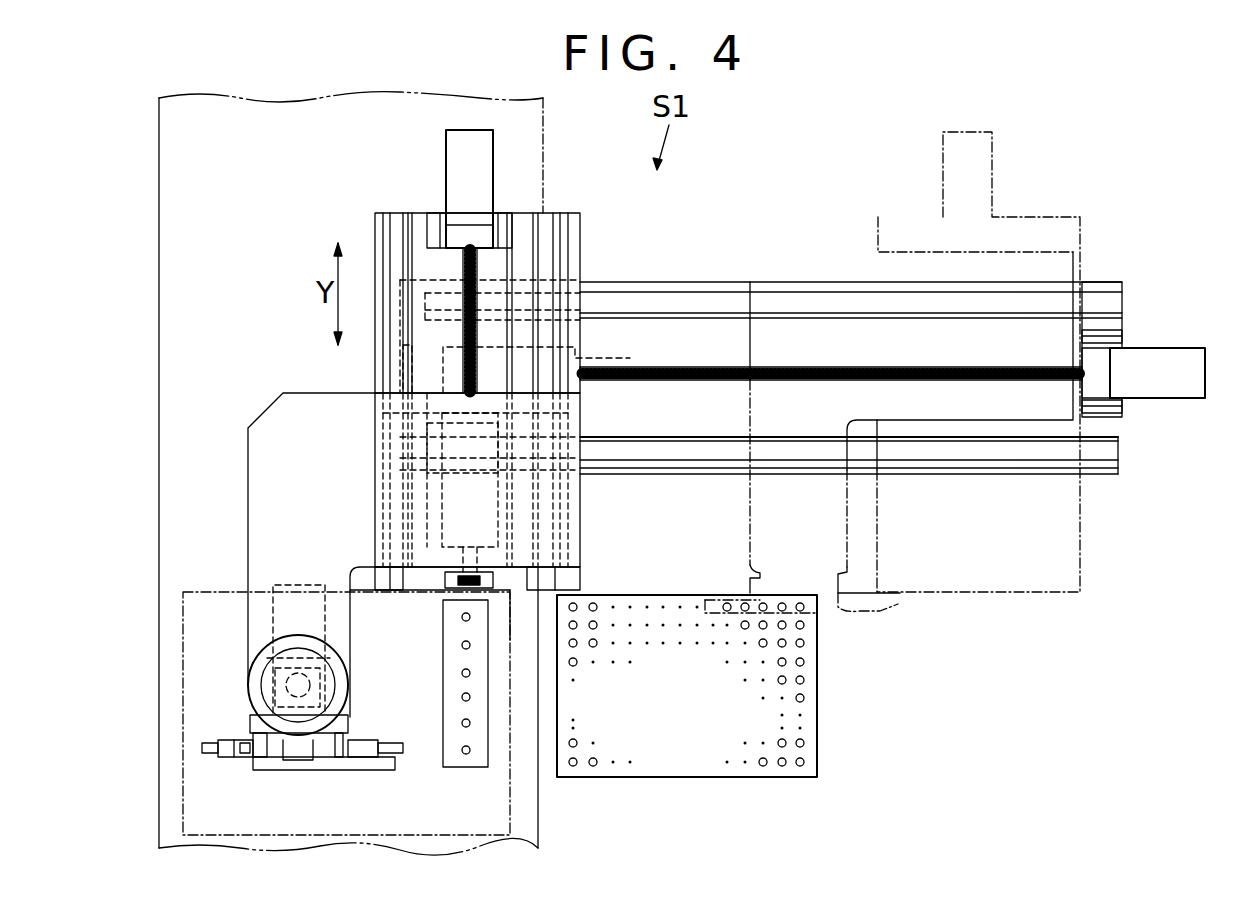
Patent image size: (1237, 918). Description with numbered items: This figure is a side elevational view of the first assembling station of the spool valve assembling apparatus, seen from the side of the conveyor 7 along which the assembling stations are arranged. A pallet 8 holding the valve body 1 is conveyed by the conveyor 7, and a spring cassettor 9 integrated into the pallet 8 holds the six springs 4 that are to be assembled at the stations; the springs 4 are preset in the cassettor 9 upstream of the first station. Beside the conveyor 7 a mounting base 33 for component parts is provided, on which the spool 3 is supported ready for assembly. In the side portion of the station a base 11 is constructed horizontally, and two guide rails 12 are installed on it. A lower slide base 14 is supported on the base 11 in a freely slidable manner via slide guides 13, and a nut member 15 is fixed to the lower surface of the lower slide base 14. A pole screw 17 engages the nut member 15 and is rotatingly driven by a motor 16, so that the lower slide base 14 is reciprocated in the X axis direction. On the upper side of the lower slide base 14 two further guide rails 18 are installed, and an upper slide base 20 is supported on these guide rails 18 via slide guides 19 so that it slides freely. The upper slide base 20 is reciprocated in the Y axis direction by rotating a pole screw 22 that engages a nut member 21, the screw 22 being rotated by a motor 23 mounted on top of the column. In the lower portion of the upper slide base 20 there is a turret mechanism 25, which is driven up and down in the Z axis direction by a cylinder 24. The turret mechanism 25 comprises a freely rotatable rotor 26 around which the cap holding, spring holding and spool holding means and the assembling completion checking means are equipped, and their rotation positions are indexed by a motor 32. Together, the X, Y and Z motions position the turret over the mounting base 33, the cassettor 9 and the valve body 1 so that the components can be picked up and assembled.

The valve body 1 is at (367, 768).
The spool 3 is at (758, 600).
The springs 4 is at (462, 700).
The conveyor 7 is at (546, 118).
The pallet 8 is at (247, 590).
The spring cassettor 9 is at (443, 670).
The base 11 is at (1120, 324).
The guide rails 12 is at (695, 297).
The slide guides 13 is at (472, 485).
The lower slide base 14 is at (570, 240).
The nut member 15 is at (628, 349).
The motor 16 is at (1163, 350).
The pole screw 17 is at (767, 372).
The guide rails 18 is at (403, 220).
The slide guides 19 is at (582, 528).
The upper slide base 20 is at (299, 410).
The nut member 21 is at (448, 545).
The pole screw 22 is at (480, 374).
The motor 23 is at (447, 152).
The cylinder 24 is at (257, 665).
The turret mechanism 25 is at (265, 773).
The rotor 26 is at (345, 727).
The motor 32 is at (290, 584).
The mounting base 33 is at (815, 692).